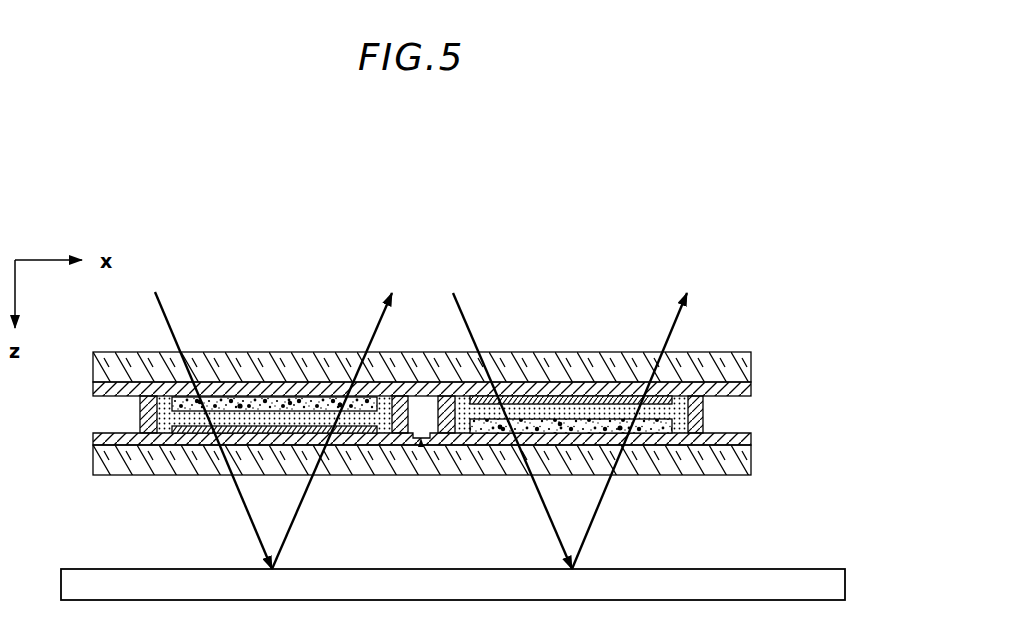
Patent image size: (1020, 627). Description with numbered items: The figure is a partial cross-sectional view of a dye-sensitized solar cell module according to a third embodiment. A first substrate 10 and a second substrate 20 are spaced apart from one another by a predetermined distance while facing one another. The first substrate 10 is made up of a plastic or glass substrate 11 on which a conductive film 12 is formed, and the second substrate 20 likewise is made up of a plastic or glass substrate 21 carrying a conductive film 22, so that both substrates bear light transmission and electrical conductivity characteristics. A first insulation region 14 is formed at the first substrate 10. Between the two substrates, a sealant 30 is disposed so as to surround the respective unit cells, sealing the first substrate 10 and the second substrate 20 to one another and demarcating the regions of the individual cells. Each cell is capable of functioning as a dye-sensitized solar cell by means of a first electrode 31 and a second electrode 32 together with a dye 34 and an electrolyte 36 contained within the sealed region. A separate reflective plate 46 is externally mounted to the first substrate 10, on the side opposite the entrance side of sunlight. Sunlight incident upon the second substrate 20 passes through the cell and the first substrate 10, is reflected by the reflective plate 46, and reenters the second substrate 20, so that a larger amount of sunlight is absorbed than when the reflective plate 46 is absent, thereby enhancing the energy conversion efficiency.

The first substrate 10 is at (467, 453).
The plastic or glass substrate 11 is at (800, 430).
The conductive film 12 is at (751, 440).
The first insulation region 14 is at (421, 446).
The second substrate 20 is at (467, 380).
The plastic or glass substrate 21 is at (751, 366).
The conductive film 22 is at (751, 392).
The sealant 30 is at (142, 400).
The first electrode 31 is at (255, 400).
The second electrode 32 is at (268, 431).
The dye 34 is at (318, 400).
The electrolyte 36 is at (213, 397).
The reflective plate 46 is at (840, 587).